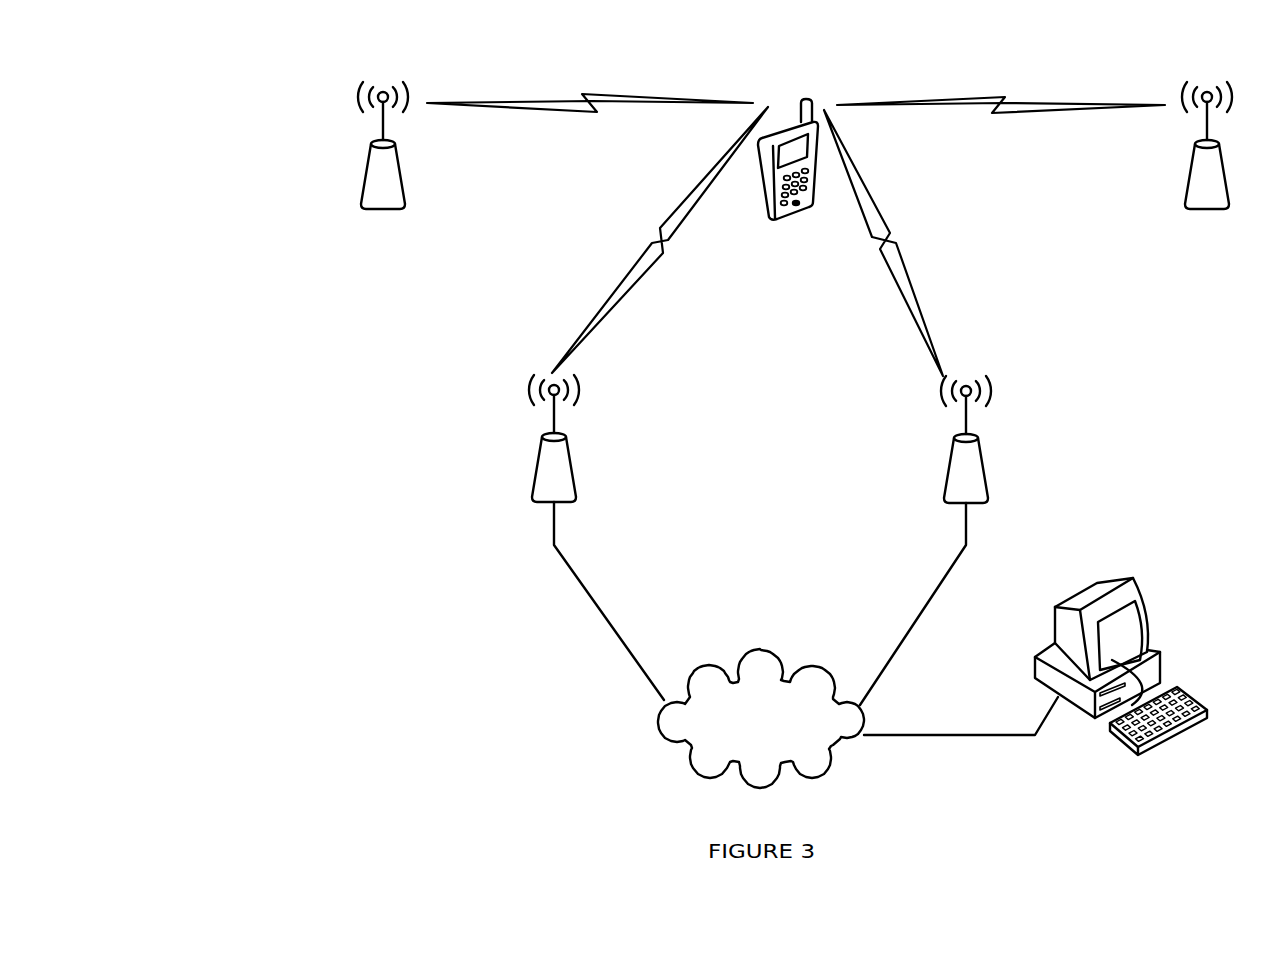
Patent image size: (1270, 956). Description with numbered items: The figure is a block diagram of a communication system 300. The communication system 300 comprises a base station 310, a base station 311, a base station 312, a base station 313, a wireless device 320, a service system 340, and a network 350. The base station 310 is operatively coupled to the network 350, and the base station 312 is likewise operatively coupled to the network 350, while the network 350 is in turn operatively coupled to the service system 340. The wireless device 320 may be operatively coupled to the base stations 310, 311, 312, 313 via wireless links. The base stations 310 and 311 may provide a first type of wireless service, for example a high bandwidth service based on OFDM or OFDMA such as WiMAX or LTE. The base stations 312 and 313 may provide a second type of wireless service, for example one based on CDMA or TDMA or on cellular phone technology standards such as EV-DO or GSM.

The communication system 300 is at (235, 62).
The base station 310 is at (540, 504).
The base station 311 is at (1193, 211).
The base station 312 is at (952, 505).
The base station 313 is at (396, 211).
The wireless device 320 is at (775, 222).
The service system 340 is at (1077, 592).
The network 350 is at (776, 738).